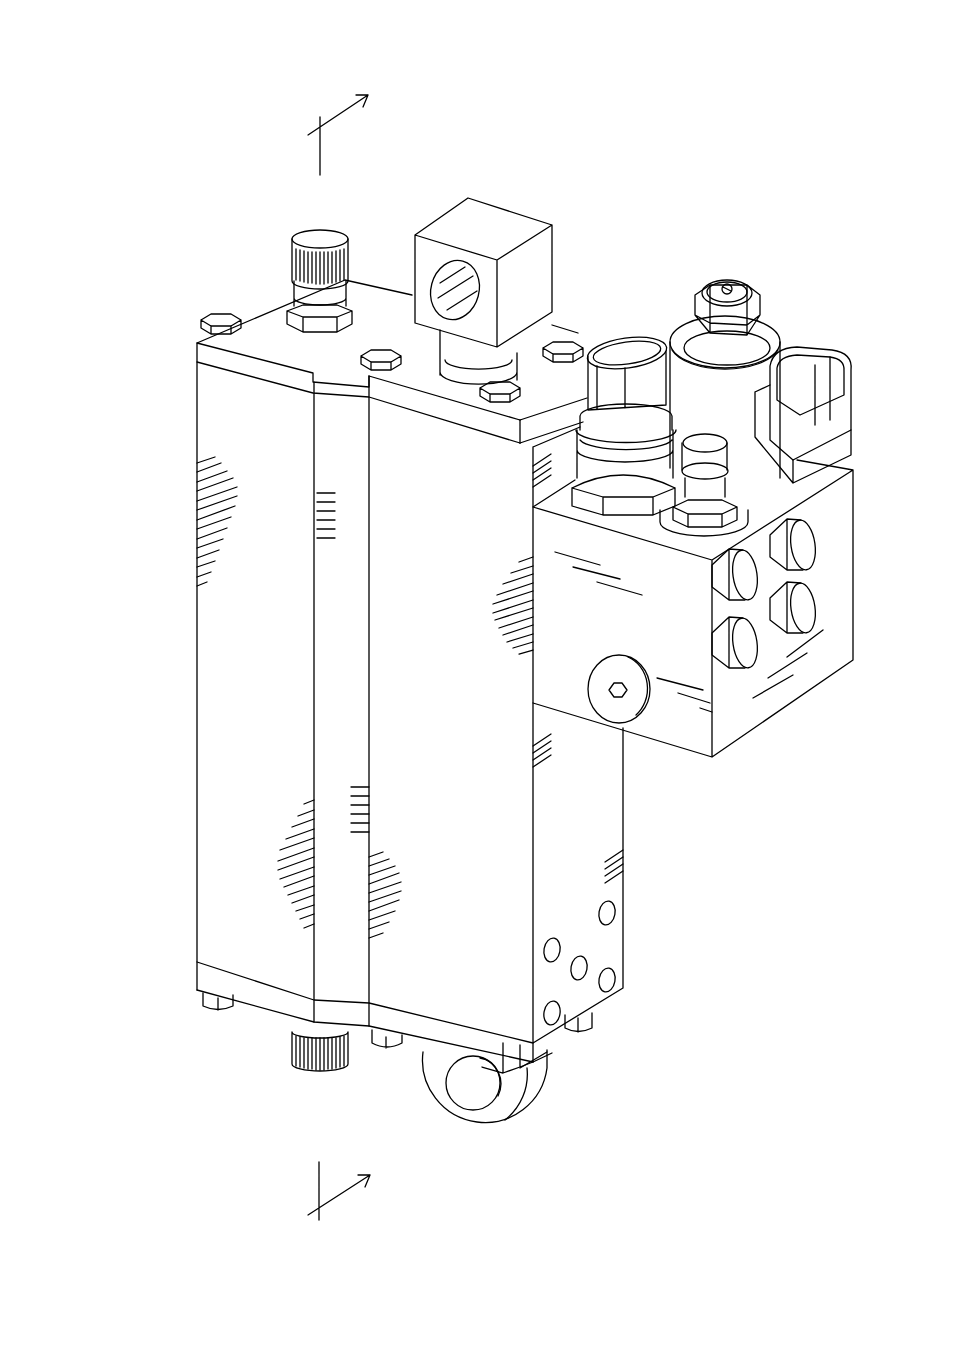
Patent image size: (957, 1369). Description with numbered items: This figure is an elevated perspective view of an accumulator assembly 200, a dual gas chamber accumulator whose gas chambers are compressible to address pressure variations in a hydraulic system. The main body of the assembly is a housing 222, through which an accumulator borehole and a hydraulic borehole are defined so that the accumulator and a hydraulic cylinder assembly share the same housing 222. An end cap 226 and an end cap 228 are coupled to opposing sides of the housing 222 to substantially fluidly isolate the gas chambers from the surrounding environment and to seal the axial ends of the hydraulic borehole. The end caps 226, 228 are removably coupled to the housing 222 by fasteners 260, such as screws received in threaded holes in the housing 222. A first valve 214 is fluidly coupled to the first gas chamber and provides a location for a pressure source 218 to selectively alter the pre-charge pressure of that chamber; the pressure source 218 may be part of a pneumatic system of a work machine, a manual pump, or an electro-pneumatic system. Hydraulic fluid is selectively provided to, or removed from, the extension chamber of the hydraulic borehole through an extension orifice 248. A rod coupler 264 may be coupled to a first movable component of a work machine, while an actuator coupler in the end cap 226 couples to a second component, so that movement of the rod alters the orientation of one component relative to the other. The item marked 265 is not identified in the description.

The accumulator assembly 200 is at (719, 113).
The first valve 214 is at (304, 1067).
The pressure source 218 is at (293, 292).
The housing 222 is at (215, 672).
The end cap 226 is at (258, 1013).
The end cap 228 is at (377, 307).
The extension orifice 248 is at (586, 966).
The fasteners 260 is at (500, 384).
The rod coupler 264 is at (490, 227).
The roller 265 is at (550, 1112).